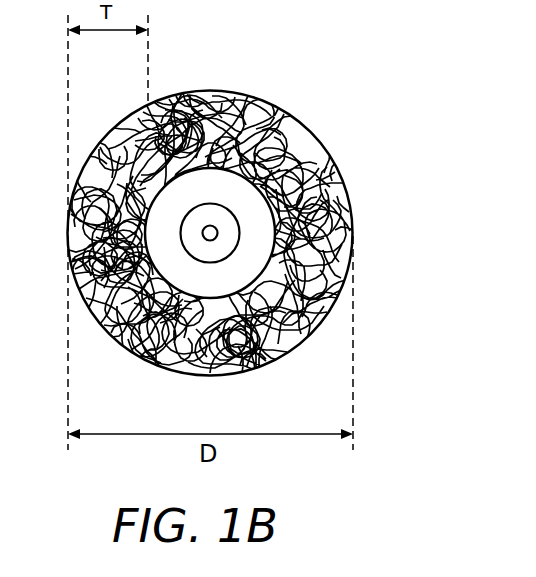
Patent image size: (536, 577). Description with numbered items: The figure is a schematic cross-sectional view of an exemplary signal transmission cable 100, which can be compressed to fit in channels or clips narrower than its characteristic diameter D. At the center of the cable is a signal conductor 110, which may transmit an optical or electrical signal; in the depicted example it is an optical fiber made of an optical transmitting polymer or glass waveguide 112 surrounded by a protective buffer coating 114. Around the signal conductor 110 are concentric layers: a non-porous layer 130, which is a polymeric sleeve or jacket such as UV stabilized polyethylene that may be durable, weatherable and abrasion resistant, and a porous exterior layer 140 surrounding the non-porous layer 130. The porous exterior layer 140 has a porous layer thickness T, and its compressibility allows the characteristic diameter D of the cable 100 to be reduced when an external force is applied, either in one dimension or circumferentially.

The signal transmission cable 100 is at (345, 83).
The porous exterior layer 140 is at (303, 145).
The non-porous layer 130 is at (257, 215).
The signal conductor 110 is at (242, 238).
The protective buffer coating 114 is at (194, 239).
The glass waveguide 112 is at (212, 235).